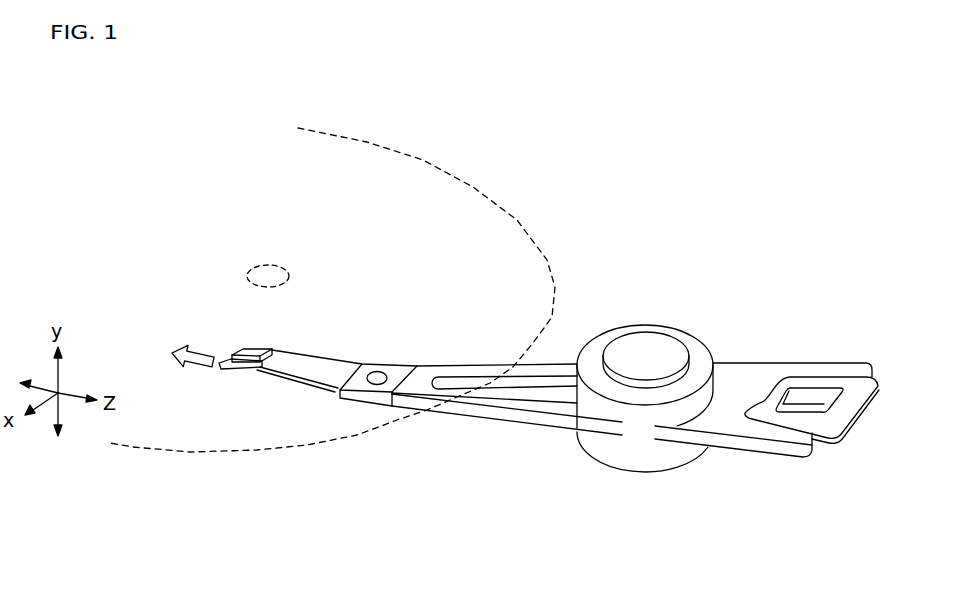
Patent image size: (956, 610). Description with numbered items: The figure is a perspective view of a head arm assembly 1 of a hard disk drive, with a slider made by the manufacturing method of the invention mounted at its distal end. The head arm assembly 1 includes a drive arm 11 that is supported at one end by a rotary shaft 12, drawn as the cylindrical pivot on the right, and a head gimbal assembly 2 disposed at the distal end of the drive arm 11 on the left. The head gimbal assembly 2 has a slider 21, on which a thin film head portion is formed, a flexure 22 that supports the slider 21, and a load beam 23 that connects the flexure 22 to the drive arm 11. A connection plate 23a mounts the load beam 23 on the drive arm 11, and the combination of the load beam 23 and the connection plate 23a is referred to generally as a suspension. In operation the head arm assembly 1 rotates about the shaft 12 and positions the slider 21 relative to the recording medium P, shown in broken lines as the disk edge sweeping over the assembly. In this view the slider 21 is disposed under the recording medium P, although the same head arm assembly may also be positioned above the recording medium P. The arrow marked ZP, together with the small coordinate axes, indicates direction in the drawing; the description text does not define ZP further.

The head arm assembly 1 is at (580, 266).
The head gimbal assembly 2 is at (220, 403).
The drive arm 11 is at (480, 419).
The rotary shaft 12 is at (653, 344).
The slider 21 is at (248, 356).
The flexure 22 is at (222, 364).
The load beam 23 is at (303, 354).
The connection plate 23a is at (377, 366).
The recording medium P is at (365, 150).
The direction ZP is at (171, 353).